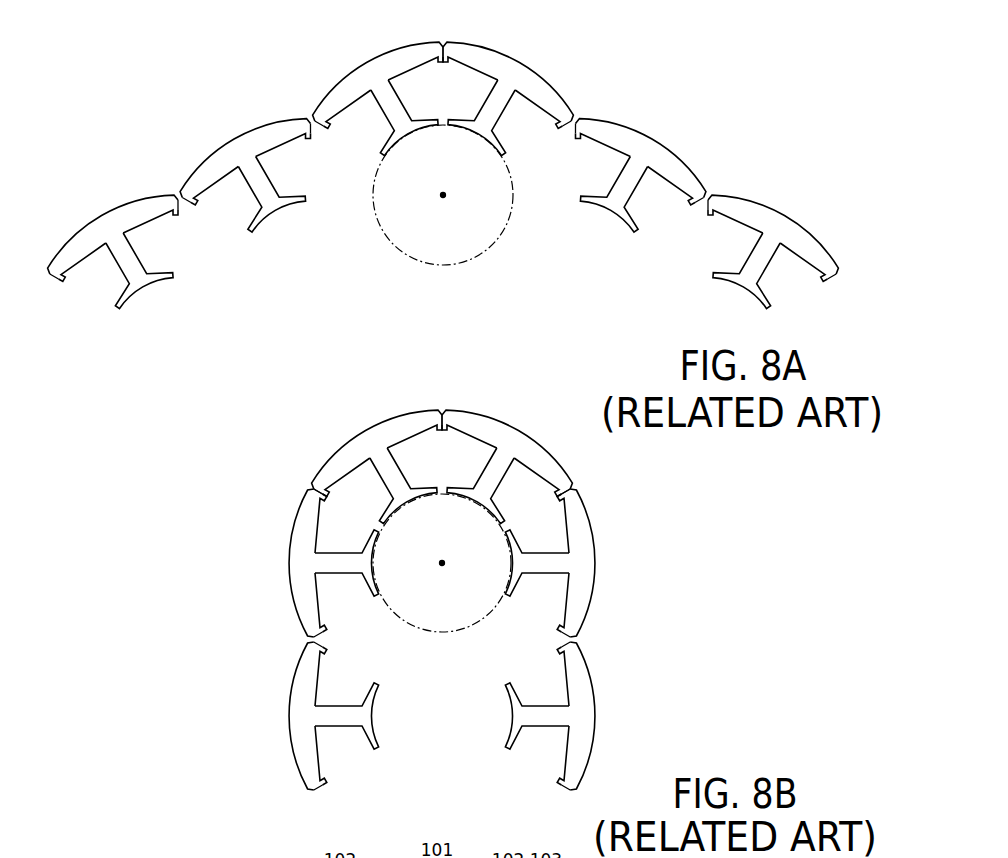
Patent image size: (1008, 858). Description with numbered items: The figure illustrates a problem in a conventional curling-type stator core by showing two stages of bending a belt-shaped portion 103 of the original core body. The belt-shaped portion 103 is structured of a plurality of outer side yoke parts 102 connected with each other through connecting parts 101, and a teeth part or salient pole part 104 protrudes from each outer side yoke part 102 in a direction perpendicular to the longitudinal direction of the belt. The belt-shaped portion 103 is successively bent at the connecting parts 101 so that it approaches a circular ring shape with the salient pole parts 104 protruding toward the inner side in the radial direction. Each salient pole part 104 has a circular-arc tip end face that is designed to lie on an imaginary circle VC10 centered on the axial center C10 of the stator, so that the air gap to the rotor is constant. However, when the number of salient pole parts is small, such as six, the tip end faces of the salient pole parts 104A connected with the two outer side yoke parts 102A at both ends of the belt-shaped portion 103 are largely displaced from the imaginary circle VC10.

In FIG. 8A, the connecting part 101 is at (442, 42).
In FIG. 8B, the connecting part 101 is at (443, 413).
In FIG. 8A, the outer side yoke part 102 is at (368, 55).
In FIG. 8B, the outer side yoke part 102 is at (364, 432).
In FIG. 8A, the belt-shaped portion 103 is at (520, 56).
In FIG. 8B, the belt-shaped portion 103 is at (518, 430).
In FIG. 8A, the teeth part (salient pole part) 104 is at (377, 115).
In FIG. 8B, the teeth part (salient pole part) 104 is at (400, 470).
In FIG. 8A, the outer side yoke part at end of belt-shaped portion 102A is at (102, 210).
In FIG. 8B, the outer side yoke part at end of belt-shaped portion 102A is at (289, 716).
In FIG. 8A, the salient pole part at end of belt-shaped portion 104A is at (146, 284).
In FIG. 8B, the salient pole part at end of belt-shaped portion 104A is at (333, 728).
In FIG. 8A, the axial center of the stator C10 is at (443, 190).
In FIG. 8B, the axial center of the stator C10 is at (442, 558).
In FIG. 8A, the imaginary circle VC10 is at (374, 229).
In FIG. 8B, the imaginary circle VC10 is at (442, 634).